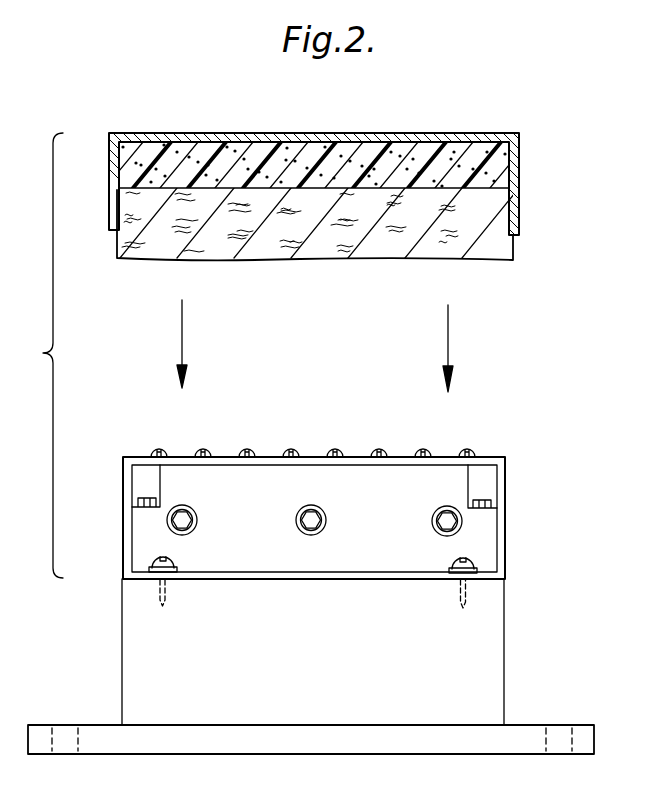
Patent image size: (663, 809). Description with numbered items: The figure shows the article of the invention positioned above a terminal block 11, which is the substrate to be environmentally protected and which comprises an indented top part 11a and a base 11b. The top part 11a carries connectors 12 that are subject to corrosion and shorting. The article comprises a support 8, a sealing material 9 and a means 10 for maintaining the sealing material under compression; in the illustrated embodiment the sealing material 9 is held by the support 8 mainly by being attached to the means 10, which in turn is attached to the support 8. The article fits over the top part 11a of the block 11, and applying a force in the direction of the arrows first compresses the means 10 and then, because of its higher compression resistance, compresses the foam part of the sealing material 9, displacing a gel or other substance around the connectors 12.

The support 8 is at (517, 165).
The sealing material 9 is at (463, 243).
The means for maintaining the sealing material under compression 10 is at (353, 163).
The terminal block 11 is at (311, 583).
The indented top part 11a is at (508, 532).
The base 11b is at (504, 664).
The connectors 12 is at (203, 452).